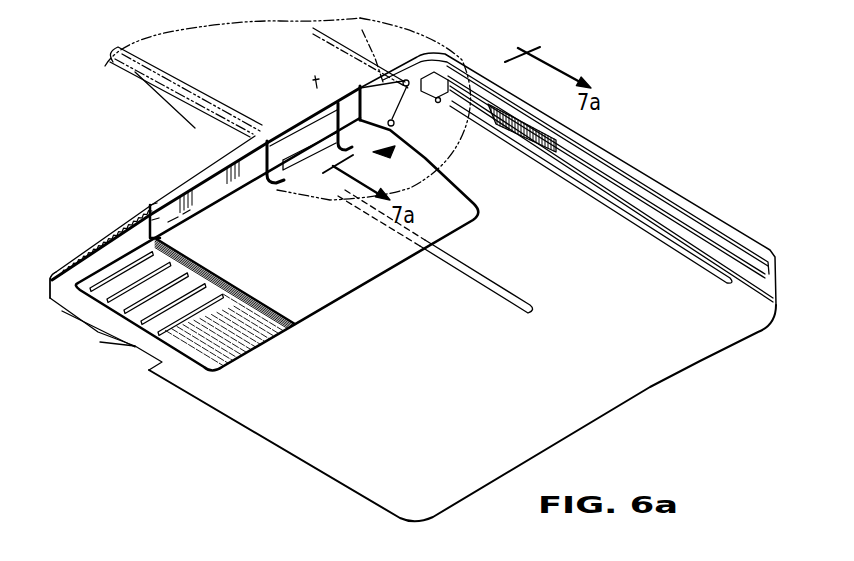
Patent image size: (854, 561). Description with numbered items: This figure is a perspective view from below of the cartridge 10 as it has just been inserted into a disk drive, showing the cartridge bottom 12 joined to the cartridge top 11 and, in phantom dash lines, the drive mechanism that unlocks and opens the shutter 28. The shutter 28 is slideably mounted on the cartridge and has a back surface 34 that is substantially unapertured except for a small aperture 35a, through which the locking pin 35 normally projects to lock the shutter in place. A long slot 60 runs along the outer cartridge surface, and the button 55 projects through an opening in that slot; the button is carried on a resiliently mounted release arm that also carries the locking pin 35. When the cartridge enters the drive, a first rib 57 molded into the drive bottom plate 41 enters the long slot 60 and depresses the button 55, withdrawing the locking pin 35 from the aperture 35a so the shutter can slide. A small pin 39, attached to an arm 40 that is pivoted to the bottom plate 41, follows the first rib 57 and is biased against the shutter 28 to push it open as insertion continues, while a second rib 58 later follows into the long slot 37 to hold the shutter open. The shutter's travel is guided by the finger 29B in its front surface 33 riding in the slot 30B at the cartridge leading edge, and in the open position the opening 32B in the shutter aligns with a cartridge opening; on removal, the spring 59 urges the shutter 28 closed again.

The cartridge 10 is at (699, 213).
The cartridge top 11 is at (640, 168).
The cartridge bottom 12 is at (648, 382).
The shutter 28 is at (387, 275).
The finger 29B is at (156, 217).
The slot 30B is at (118, 243).
The opening 32B is at (302, 138).
The front surface 33 is at (220, 180).
The back surface 34 is at (323, 278).
The locking pin 35 is at (428, 172).
The aperture 35a is at (387, 150).
The long slot 37 is at (463, 276).
The pin 39 is at (378, 92).
The arm 40 is at (316, 74).
The bottom plate 41 is at (360, 17).
The button 55 is at (439, 103).
The first rib 57 is at (374, 51).
The second rib 58 is at (179, 92).
The spring 59 is at (66, 270).
The long slot 60 is at (582, 189).